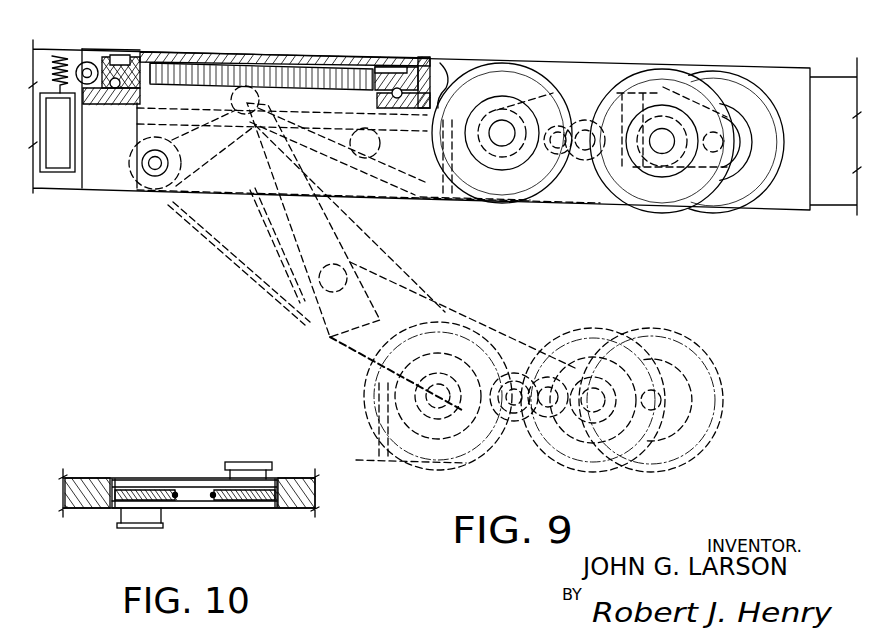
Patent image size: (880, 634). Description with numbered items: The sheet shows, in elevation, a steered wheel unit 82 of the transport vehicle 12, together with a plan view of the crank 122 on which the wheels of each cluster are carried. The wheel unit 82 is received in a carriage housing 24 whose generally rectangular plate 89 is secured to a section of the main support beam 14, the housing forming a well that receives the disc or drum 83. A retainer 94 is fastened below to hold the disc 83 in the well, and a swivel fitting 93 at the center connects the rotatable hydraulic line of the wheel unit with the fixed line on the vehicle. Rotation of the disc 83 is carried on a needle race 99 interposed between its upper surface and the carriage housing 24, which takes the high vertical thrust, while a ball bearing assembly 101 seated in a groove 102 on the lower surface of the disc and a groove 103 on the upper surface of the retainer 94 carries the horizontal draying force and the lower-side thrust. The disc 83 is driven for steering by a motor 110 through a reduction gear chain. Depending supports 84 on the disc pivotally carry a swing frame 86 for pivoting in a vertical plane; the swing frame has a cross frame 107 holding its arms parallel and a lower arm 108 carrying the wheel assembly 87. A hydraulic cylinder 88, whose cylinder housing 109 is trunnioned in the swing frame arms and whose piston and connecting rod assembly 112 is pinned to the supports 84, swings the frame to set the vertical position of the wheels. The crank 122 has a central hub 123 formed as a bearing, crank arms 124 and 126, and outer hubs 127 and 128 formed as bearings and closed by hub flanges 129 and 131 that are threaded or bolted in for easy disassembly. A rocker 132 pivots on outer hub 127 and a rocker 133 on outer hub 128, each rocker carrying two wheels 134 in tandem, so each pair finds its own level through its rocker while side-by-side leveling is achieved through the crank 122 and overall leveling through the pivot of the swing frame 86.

In FIG. 9, the transport vehicle 12 is at (260, 318).
In FIG. 9, the main support beam 14 is at (686, 276).
In FIG. 9, the carriage housing 24 is at (239, 30).
In FIG. 9, the steered wheel unit 82 is at (526, 225).
In FIG. 9, the disc or drum 83 is at (365, 58).
In FIG. 9, the depending supports 84 is at (198, 138).
In FIG. 9, the swing frames 86 is at (122, 224).
In FIG. 9, the wheel assemblies 87 is at (594, 313).
In FIG. 9, the hydraulic cylinders 88 is at (368, 183).
In FIG. 9, the rectangular plate 89 is at (333, 52).
In FIG. 9, the swivel fitting 93 is at (250, 57).
In FIG. 9, the retainer 94 is at (440, 63).
In FIG. 9, the needle race 99 is at (420, 58).
In FIG. 9, the ball bearing assembly 101 is at (112, 54).
In FIG. 9, the groove 102 is at (66, 55).
In FIG. 9, the groove 103 is at (150, 62).
In FIG. 9, the cross frame 107 is at (150, 186).
In FIG. 9, the lower arm 108 is at (460, 296).
In FIG. 9, the cylinder housing 109 is at (410, 185).
In FIG. 9, the motor 110 is at (55, 172).
In FIG. 9, the piston and connecting rod assembly 112 is at (268, 160).
In FIG. 10, the crank 122 is at (108, 446).
In FIG. 9, the central hub 123 is at (615, 123).
In FIG. 10, the central hub 123 is at (187, 489).
In FIG. 10, the crank arm 124 is at (237, 506).
In FIG. 10, the crank arm 126 is at (138, 481).
In FIG. 9, the outer hub 127 is at (583, 160).
In FIG. 10, the outer hub 127 is at (128, 520).
In FIG. 10, the outer hub 128 is at (259, 470).
In FIG. 10, the hub flange 129 is at (167, 528).
In FIG. 10, the hub flange 131 is at (223, 462).
In FIG. 9, the rocker 132 is at (575, 165).
In FIG. 9, the rocker 133 is at (736, 150).
In FIG. 9, the wheels 134 is at (560, 182).